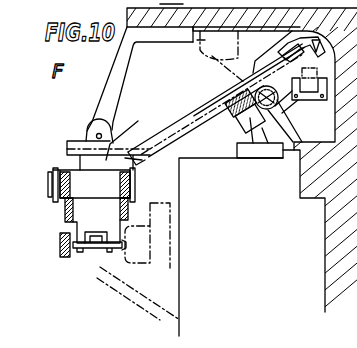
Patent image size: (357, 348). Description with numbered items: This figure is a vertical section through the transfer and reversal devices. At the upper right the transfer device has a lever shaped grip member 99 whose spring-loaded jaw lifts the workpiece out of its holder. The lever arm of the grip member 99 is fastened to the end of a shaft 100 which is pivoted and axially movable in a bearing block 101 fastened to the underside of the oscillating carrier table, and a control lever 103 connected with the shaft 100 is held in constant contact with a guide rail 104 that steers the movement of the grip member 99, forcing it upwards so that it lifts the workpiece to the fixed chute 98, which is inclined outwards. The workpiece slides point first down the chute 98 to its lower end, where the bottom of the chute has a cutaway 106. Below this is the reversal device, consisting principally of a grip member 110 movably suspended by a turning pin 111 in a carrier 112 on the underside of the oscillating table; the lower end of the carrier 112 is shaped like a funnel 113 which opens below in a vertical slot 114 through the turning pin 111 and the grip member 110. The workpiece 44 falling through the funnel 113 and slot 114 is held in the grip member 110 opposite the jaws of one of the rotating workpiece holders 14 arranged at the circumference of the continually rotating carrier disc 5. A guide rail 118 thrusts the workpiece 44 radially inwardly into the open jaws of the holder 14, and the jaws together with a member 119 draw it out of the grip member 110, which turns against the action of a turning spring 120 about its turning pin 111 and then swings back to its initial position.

The rotating carrier disc 5 is at (189, 160).
The rotating workpiece holder 14 is at (175, 245).
The workpiece 44 is at (100, 248).
The chute 98 is at (192, 112).
The grip member 99 is at (302, 68).
The shaft 100 is at (290, 110).
The bearing block 101 is at (213, 57).
The control lever 103 is at (237, 150).
The guide rail 104 is at (236, 117).
The cutaway 106 is at (84, 140).
The grip member 110 is at (85, 209).
The turning pin 111 is at (131, 183).
The carrier 112 is at (106, 88).
The funnel 113 is at (130, 131).
The vertical slot 114 is at (136, 156).
The guide rail 118 is at (63, 255).
The member 119 is at (137, 295).
The turning spring 120 is at (68, 163).